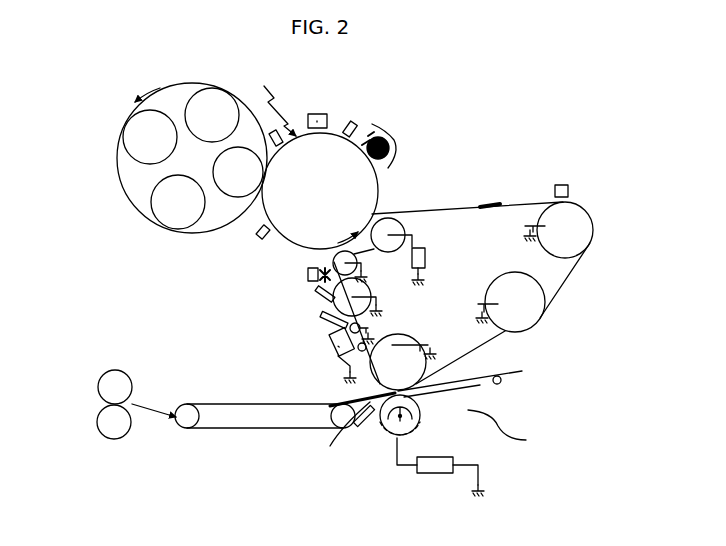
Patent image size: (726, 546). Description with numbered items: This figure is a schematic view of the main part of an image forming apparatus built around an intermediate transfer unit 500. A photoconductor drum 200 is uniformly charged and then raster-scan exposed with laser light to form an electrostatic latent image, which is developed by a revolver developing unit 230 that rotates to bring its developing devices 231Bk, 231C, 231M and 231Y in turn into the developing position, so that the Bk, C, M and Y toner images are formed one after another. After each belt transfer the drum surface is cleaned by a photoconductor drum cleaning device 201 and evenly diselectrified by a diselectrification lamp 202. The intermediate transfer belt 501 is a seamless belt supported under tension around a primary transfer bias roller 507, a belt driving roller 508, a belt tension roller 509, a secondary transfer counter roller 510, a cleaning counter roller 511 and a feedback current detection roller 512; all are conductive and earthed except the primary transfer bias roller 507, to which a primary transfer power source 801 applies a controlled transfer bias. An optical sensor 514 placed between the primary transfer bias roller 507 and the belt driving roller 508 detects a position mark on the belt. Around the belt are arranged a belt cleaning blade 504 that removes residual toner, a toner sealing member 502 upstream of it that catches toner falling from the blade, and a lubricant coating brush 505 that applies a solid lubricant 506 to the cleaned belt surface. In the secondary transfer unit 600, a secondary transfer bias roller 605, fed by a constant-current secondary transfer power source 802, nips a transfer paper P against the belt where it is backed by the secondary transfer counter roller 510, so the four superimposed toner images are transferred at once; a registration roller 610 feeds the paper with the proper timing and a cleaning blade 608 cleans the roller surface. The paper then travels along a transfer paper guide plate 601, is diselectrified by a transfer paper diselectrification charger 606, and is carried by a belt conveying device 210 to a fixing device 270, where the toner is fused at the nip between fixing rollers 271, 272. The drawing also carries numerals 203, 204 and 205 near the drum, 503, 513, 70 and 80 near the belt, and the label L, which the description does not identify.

The photoconductor drum 200 is at (320, 191).
The photoconductor drum cleaning device 201 is at (389, 145).
The diselectrification lamp 202 is at (358, 121).
The charging device 203 is at (326, 111).
The exposure device 204 is at (272, 129).
The sensor 205 is at (260, 234).
The belt conveying device 210 is at (300, 430).
The revolver developing unit 230 is at (173, 239).
The yellow developing unit 231Y is at (150, 137).
The developing device 231M is at (178, 202).
The developing device 231C is at (238, 172).
The developing device 231Bk is at (212, 115).
The fixing device 270 is at (134, 416).
The fixing roller 271 is at (110, 392).
The fixing roller 272 is at (111, 424).
The intermediate transfer unit 500 is at (542, 193).
The intermediate transfer belt 501 is at (454, 212).
The toner sealing member 502 is at (320, 321).
The waste toner container 503 is at (328, 353).
The belt cleaning blade 504 is at (318, 291).
The lubricant coating brush 505 is at (333, 265).
The lubricant 506 is at (306, 274).
The primary transfer bias roller 507 is at (407, 226).
The belt driving roller 508 is at (538, 254).
The belt tension roller 509 is at (484, 299).
The secondary transfer counter roller 510 is at (406, 340).
The cleaning counter roller 511 is at (373, 293).
The feedback current detection roller 512 is at (360, 265).
The sensor 513 is at (485, 202).
The optical sensor 514 is at (566, 185).
The secondary transfer unit 600 is at (381, 470).
The transfer paper guide plate 601 is at (505, 428).
The secondary transfer bias roller 605 is at (425, 409).
The transfer paper diselectrification charger 606 is at (330, 454).
The cleaning blade 608 is at (366, 424).
The registration roller 610 is at (476, 375).
The cleaning roller 70 is at (362, 347).
The cleaning blade 80 is at (346, 324).
The primary transfer power source 801 is at (425, 264).
The secondary transfer power source 802 is at (439, 474).
The laser beam L is at (280, 88).
The transfer paper P is at (500, 380).